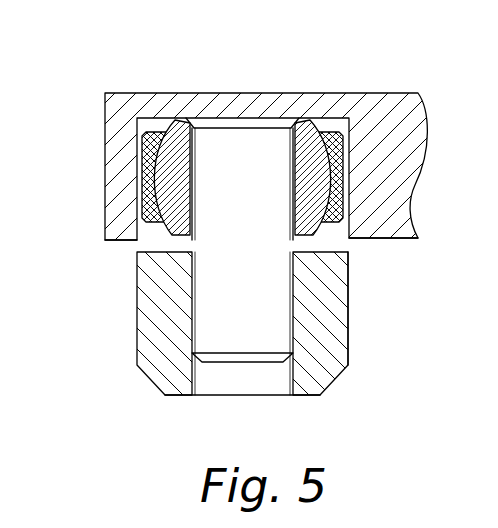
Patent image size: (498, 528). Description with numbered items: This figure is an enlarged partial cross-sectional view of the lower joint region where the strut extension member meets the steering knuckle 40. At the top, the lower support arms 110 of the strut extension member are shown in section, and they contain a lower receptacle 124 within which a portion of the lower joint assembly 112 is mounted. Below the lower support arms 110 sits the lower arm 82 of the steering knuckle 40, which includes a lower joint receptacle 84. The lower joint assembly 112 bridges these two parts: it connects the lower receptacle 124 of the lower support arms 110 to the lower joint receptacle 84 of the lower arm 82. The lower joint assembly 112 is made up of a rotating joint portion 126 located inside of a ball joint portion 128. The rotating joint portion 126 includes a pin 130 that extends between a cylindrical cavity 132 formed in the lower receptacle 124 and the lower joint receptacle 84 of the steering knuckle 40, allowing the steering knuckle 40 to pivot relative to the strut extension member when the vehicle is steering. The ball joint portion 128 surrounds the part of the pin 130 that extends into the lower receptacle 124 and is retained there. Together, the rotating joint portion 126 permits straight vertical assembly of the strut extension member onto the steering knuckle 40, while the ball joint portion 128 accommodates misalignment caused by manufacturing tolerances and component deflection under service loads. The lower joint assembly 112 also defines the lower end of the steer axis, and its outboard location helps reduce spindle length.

The lower support arms 110 is at (398, 92).
The lower joint assembly 112 is at (134, 254).
The lower receptacle 124 is at (337, 229).
The rotating joint portion 126 is at (328, 157).
The ball joint portion 128 is at (155, 131).
The pin 130 is at (263, 362).
The cylindrical cavity 132 is at (188, 178).
The steering knuckle 40 is at (136, 318).
The lower arm 82 is at (349, 322).
The lower joint receptacle 84 is at (195, 375).